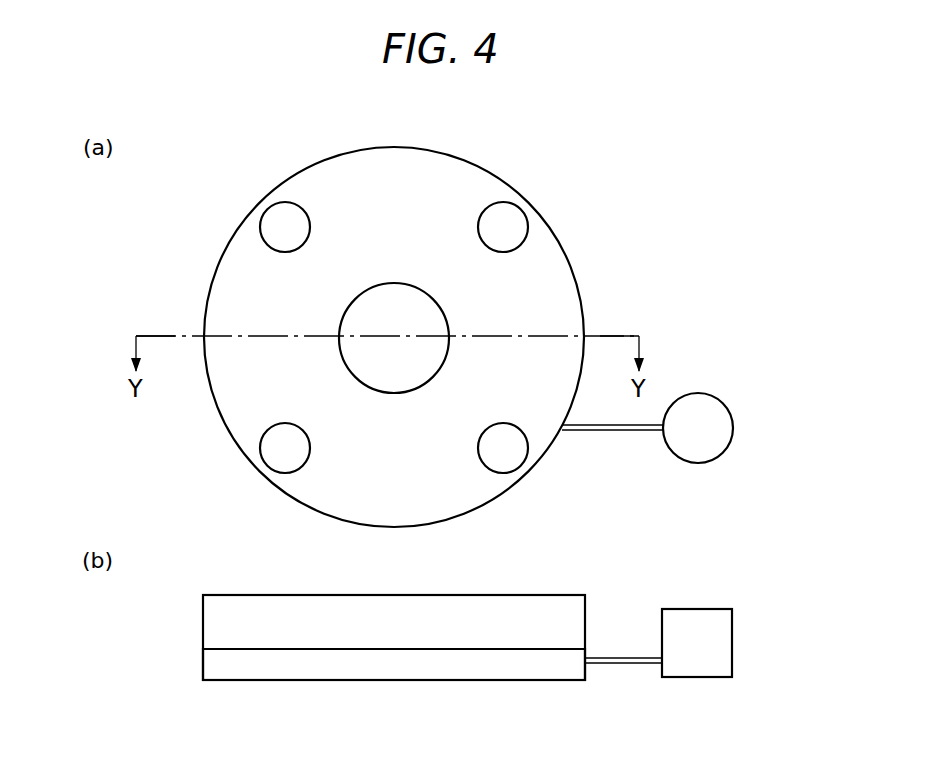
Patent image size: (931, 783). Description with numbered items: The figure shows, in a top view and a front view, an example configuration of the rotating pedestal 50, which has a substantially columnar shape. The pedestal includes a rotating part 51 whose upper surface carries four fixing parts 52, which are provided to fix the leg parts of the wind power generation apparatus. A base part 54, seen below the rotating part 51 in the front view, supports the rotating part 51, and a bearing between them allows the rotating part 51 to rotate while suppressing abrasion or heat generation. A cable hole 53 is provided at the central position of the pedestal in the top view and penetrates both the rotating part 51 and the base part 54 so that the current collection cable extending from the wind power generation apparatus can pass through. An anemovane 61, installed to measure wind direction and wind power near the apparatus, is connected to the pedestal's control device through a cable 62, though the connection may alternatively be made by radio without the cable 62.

The rotating pedestal 50 is at (660, 185).
The rotating part 51 is at (562, 292).
The fixing parts 52 is at (278, 222).
The cable hole 53 is at (355, 313).
The base part 54 is at (205, 670).
The anemovane 61 is at (726, 420).
The cable 62 is at (630, 433).